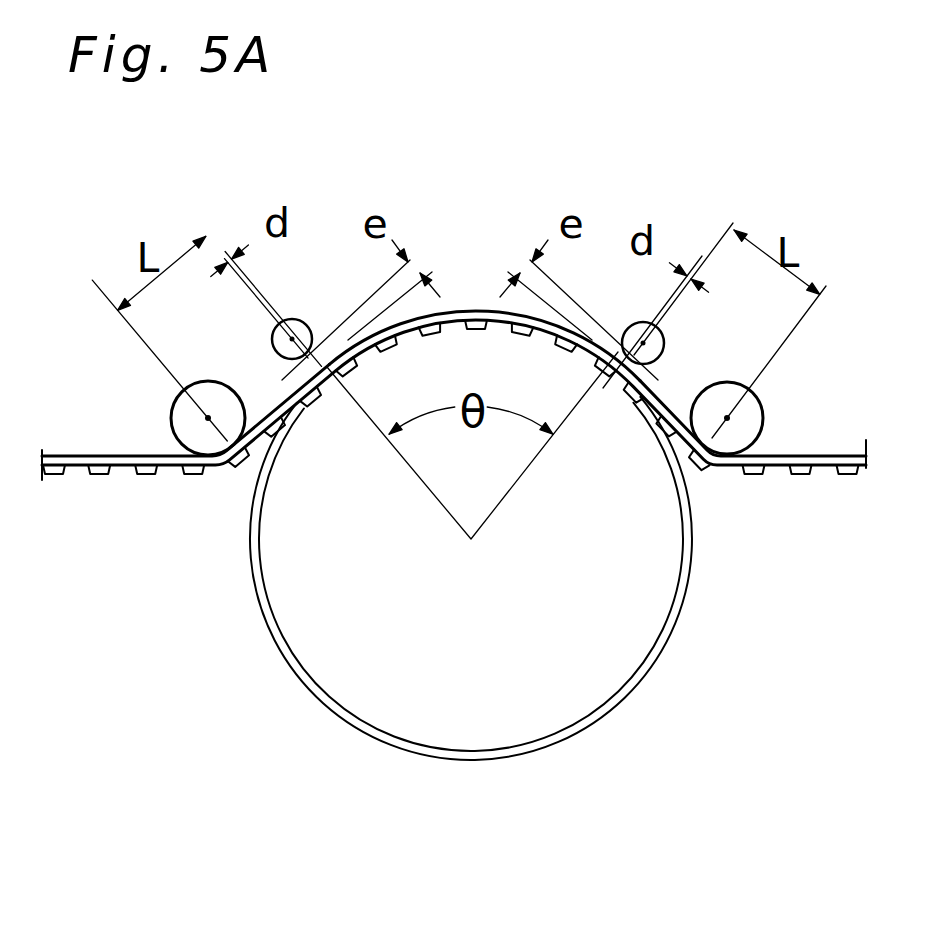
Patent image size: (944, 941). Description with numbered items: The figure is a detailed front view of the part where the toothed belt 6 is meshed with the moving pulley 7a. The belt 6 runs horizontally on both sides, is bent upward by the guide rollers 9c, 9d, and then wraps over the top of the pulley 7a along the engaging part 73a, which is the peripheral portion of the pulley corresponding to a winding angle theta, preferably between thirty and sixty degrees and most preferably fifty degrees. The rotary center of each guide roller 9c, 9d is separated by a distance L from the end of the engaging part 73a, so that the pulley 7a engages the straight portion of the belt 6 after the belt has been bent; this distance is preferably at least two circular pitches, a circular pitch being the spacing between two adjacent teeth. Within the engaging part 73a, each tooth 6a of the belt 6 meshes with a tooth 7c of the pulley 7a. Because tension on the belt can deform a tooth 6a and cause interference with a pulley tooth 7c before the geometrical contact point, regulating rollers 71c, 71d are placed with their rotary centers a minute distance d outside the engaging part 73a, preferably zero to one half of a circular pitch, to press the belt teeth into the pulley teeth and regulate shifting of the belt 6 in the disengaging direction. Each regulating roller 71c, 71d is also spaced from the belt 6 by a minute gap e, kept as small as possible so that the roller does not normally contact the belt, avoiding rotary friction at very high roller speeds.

The toothed belt 6 is at (128, 470).
The tooth of the belt 6a is at (193, 478).
The moving pulley 7a is at (657, 588).
The tooth of the pulley 7c is at (327, 380).
The guide roller 9c is at (182, 419).
The guide roller 9d is at (763, 418).
The regulating roller 71c is at (282, 344).
The regulating roller 71d is at (664, 346).
The engaging part 73a is at (470, 300).